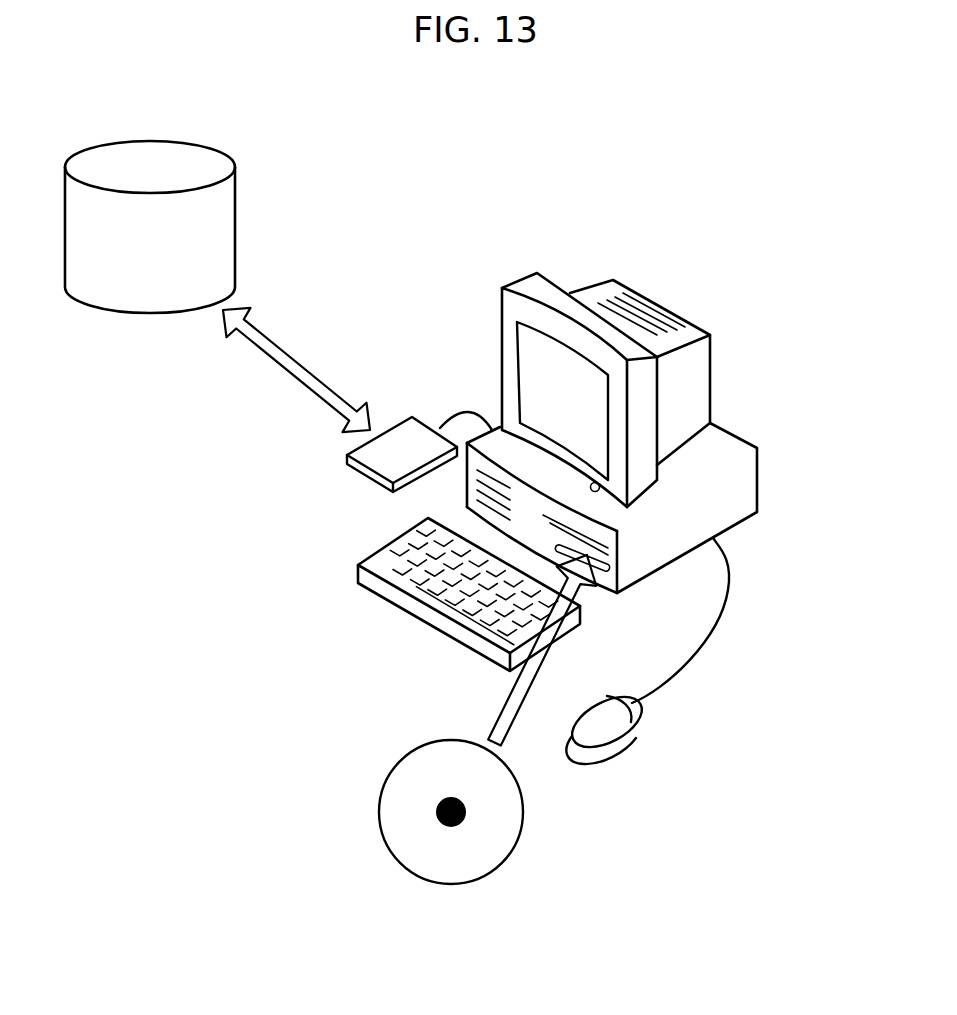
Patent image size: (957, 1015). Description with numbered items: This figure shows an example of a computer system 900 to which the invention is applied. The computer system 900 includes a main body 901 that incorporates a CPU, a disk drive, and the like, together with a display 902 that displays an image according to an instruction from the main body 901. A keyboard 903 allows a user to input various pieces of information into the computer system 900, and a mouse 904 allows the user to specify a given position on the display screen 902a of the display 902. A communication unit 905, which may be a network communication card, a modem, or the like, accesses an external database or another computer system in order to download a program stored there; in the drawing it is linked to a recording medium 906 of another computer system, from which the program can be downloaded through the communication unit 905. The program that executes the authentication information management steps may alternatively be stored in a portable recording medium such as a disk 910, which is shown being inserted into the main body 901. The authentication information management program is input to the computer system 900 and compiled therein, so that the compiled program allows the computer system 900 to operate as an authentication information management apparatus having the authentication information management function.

The computer system 900 is at (682, 288).
The main body 901 is at (760, 487).
The display 902 is at (605, 390).
The display screen 902a is at (523, 380).
The keyboard 903 is at (412, 616).
The mouse 904 is at (625, 737).
The communication unit 905 is at (352, 468).
The recording medium 906 is at (235, 212).
The disk 910 is at (522, 837).